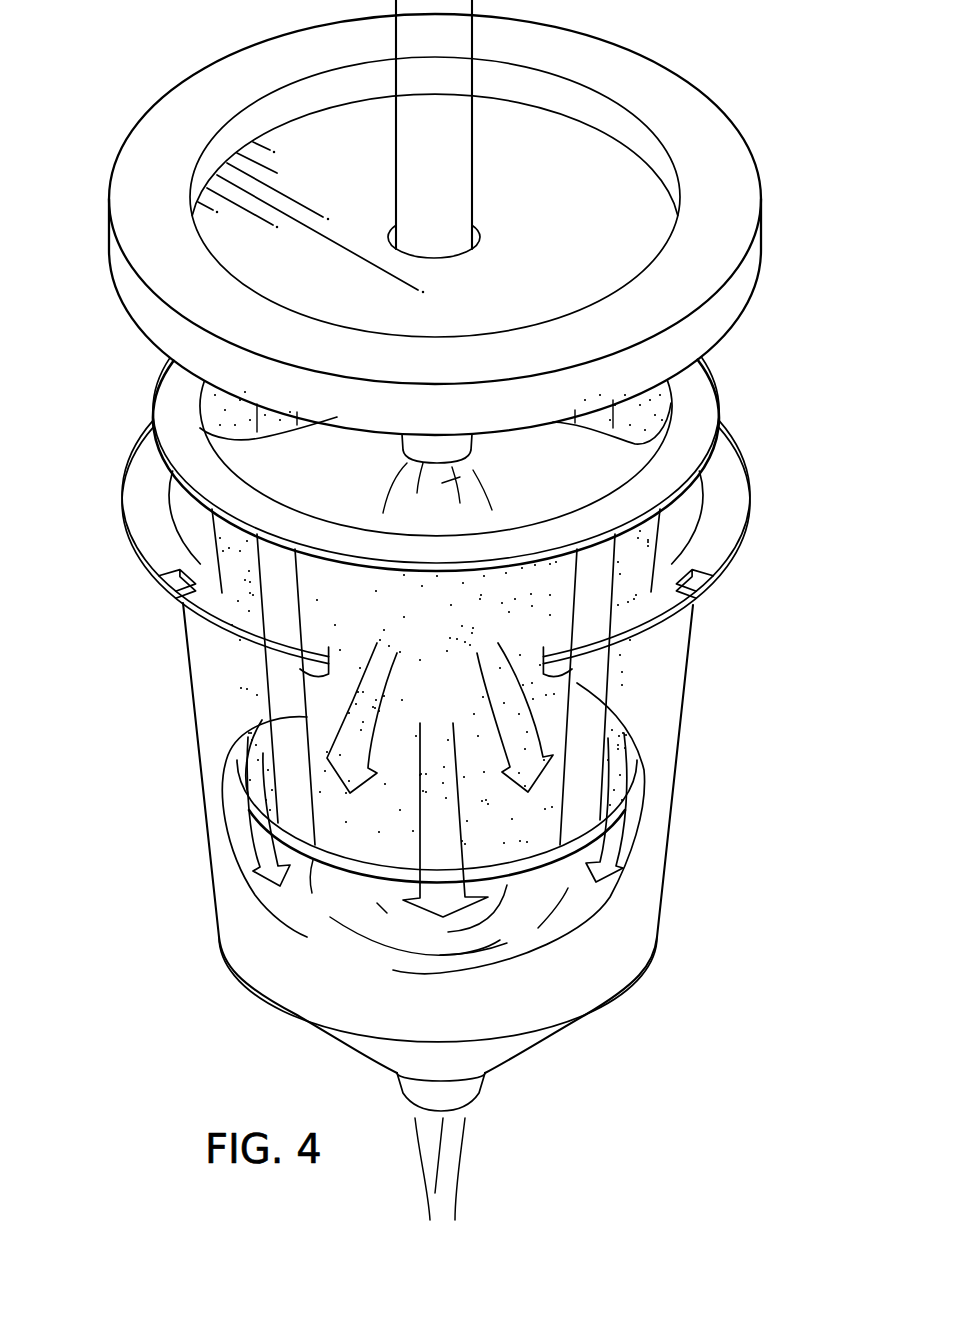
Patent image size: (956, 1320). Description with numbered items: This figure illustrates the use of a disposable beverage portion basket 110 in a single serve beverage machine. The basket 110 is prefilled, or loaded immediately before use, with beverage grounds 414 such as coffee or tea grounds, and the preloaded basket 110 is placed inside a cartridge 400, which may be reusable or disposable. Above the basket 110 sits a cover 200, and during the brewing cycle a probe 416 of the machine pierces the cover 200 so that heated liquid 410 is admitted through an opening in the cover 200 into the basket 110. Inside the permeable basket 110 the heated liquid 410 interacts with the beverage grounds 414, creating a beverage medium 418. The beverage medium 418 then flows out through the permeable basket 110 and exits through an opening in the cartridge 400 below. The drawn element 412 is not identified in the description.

The cover 200 is at (150, 37).
The probe 416 is at (448, 163).
The basket 110 is at (750, 364).
The beverage grounds 414 is at (277, 470).
The heated liquid 410 is at (447, 477).
The perforated basket wall 412 is at (202, 535).
The cartridge 400 is at (163, 931).
The beverage medium 418 is at (535, 906).